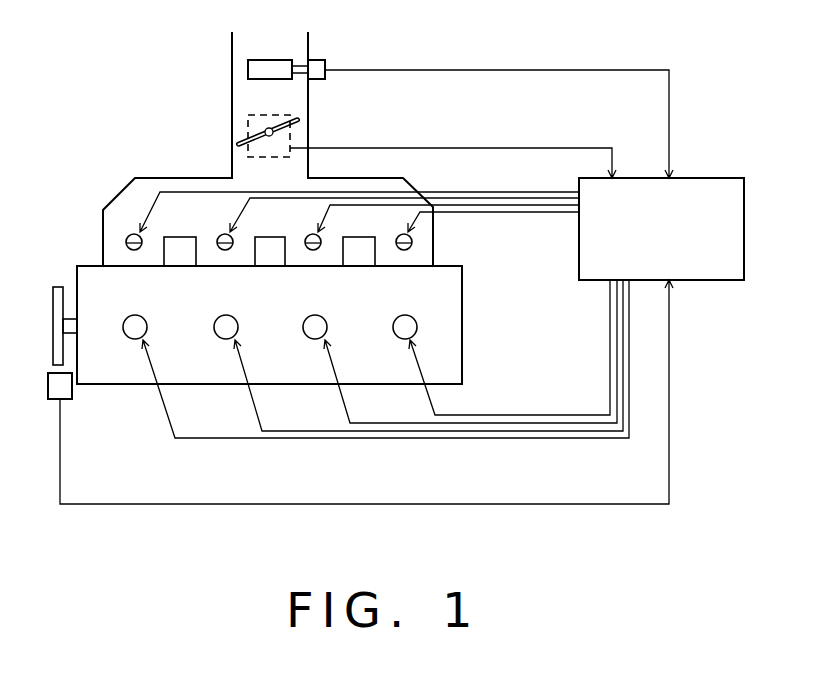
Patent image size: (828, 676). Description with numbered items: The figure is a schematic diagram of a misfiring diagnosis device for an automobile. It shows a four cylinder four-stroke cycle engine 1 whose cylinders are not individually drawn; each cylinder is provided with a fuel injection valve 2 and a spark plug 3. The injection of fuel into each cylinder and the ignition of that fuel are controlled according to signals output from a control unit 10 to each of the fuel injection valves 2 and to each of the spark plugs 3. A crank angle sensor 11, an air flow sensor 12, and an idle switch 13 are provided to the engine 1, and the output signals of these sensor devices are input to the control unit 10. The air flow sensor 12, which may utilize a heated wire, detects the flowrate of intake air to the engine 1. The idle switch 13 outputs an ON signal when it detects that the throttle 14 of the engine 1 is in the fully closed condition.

The engine 1 is at (465, 330).
The fuel injection valve 2 is at (128, 243).
The spark plug 3 is at (128, 340).
The control unit 10 is at (744, 228).
The crank angle sensor 11 is at (48, 392).
The air flow sensor 12 is at (268, 60).
The idle switch 13 is at (248, 132).
The throttle 14 is at (299, 123).